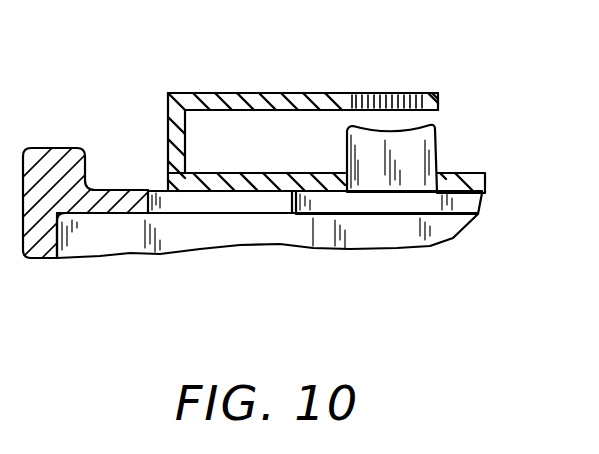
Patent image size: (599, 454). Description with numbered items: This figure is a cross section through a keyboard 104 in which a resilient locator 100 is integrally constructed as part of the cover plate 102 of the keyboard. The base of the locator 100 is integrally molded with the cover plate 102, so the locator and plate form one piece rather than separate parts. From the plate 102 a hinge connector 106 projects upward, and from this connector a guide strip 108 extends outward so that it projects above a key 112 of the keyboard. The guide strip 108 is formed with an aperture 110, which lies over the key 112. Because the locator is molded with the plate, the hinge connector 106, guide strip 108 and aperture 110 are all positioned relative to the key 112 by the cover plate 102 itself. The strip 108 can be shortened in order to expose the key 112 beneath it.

The resilient locator 100 is at (286, 158).
The cover plate 102 is at (484, 174).
The keyboard 104 is at (480, 215).
The hinge connector 106 is at (168, 130).
The guide strip 108 is at (220, 92).
The aperture 110 is at (383, 92).
The key 112 is at (438, 127).